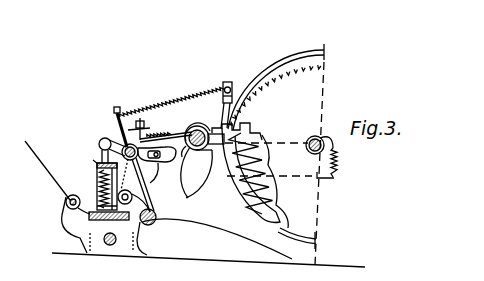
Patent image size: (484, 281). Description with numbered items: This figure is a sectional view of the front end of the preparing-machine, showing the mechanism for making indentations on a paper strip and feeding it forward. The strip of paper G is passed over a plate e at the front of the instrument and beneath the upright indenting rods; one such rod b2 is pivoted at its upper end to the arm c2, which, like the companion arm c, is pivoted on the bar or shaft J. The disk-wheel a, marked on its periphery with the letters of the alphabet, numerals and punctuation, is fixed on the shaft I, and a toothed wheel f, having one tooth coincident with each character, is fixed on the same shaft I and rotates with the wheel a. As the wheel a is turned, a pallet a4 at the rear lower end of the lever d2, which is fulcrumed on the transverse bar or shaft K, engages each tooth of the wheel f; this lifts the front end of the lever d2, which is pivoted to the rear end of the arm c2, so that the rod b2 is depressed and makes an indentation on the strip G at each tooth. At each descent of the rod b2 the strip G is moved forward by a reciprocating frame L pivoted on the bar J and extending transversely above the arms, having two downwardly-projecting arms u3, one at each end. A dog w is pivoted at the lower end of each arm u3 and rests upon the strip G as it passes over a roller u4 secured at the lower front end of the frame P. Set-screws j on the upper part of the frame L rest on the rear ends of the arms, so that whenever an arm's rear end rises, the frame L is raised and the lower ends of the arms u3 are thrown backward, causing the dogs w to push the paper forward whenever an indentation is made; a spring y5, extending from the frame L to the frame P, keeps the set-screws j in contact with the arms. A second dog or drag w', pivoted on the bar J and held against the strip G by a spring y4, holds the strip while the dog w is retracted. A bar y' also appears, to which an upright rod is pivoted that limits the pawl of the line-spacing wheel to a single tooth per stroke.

The disk-wheel a is at (276, 153).
The pallet a4 is at (285, 238).
The strip of paper G is at (158, 200).
The plate e is at (109, 223).
The downwardly-projecting arms u3 is at (97, 183).
The arm c2 is at (100, 146).
The upright rod b2 is at (93, 162).
The second dog or drag w' is at (146, 178).
The roller u4 is at (157, 222).
The dog w is at (142, 185).
The bar or shaft J is at (112, 128).
The set-screws j is at (146, 118).
The reciprocating frame L is at (150, 124).
The arm c is at (157, 165).
The frame P is at (265, 175).
The lever d2 is at (210, 150).
The spring y5 is at (188, 157).
The spring y4 is at (200, 112).
The transverse bar or shaft K is at (233, 123).
The bar y' is at (209, 76).
The toothed wheel f is at (268, 180).
The shaft I is at (316, 157).